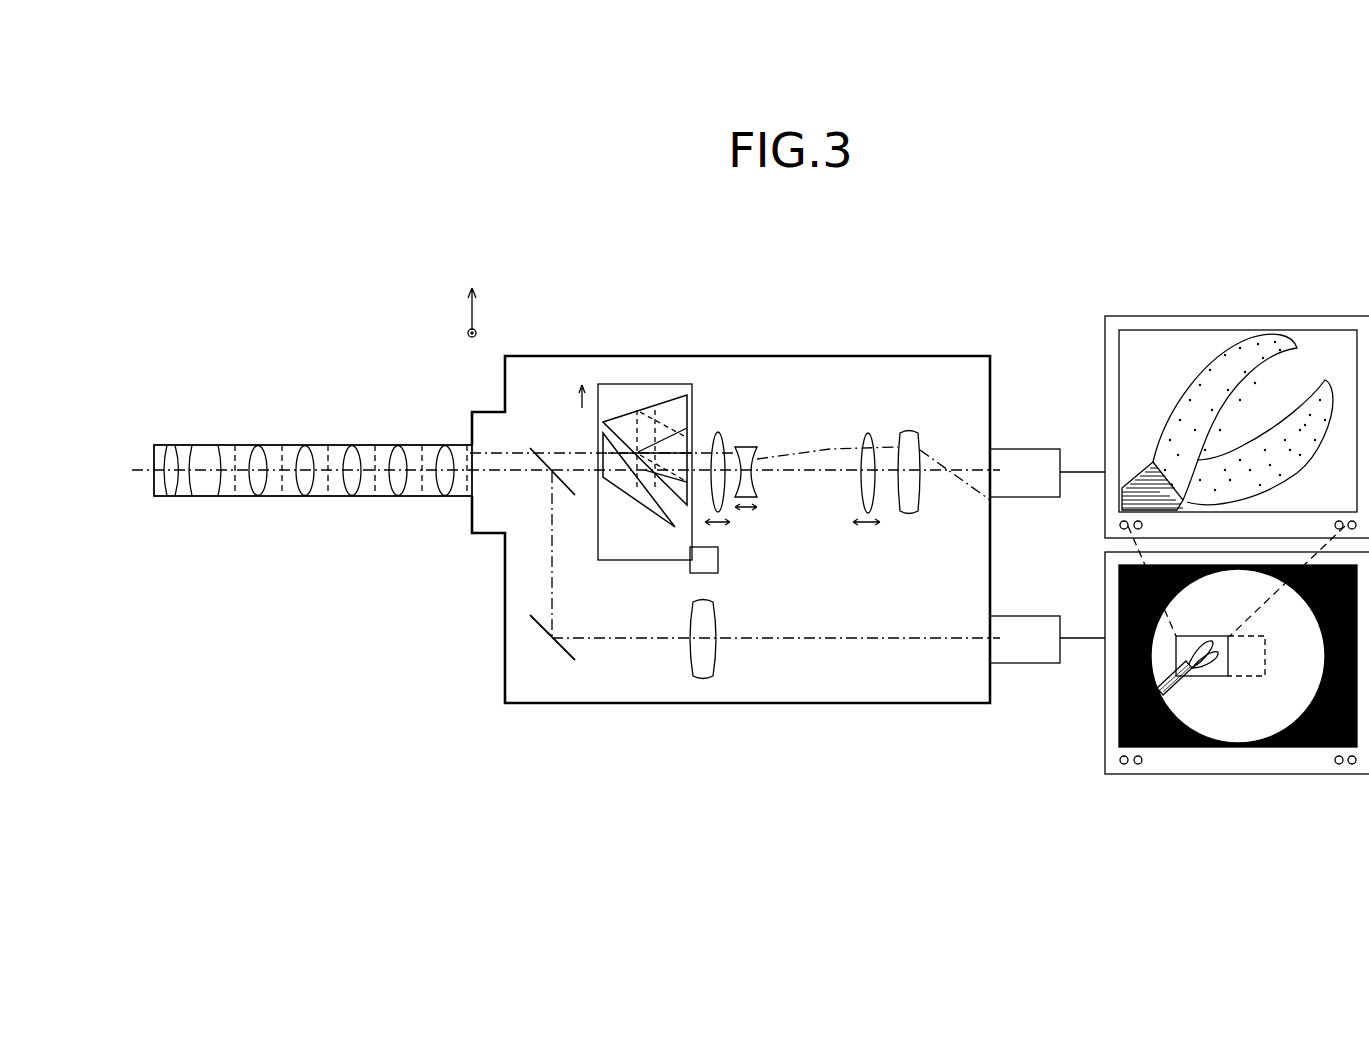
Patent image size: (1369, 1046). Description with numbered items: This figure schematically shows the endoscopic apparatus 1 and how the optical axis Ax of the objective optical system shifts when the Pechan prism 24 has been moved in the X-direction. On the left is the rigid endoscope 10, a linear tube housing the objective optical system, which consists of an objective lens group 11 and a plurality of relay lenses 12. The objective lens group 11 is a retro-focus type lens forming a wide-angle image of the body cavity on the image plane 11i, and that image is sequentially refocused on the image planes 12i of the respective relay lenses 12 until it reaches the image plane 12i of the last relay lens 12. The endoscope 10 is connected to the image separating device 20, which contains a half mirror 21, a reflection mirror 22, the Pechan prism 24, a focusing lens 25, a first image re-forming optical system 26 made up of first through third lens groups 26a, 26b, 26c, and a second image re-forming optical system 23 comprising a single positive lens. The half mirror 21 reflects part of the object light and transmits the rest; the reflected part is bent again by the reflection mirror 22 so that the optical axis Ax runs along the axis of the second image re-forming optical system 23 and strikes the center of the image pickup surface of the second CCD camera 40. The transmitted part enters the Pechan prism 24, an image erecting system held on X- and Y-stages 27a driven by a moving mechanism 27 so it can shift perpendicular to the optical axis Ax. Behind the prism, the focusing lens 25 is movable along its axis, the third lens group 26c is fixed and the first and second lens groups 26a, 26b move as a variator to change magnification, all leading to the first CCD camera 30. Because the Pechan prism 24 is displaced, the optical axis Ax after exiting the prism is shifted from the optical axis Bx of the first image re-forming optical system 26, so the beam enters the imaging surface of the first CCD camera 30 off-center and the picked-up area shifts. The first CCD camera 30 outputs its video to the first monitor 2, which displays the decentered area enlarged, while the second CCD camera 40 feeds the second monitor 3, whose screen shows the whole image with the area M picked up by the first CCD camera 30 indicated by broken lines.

The endoscopic apparatus 1 is at (938, 312).
The first monitor 2 is at (1240, 316).
The second monitor 3 is at (1238, 775).
The rigid endoscope 10 is at (422, 445).
The objective lens group 11 is at (225, 437).
The relay lenses 12 is at (262, 445).
The image plane 11i is at (235, 499).
The image planes 12i is at (282, 499).
The image separating device 20 is at (540, 356).
The half mirror 21 is at (572, 491).
The reflection mirror 22 is at (548, 632).
The second image re-forming optical system 23 is at (716, 661).
The Pechan prism 24 is at (672, 399).
The focusing lens 25 is at (716, 432).
The first image re-forming optical system 26 is at (923, 391).
The first lens group 26a is at (746, 447).
The second lens group 26b is at (868, 433).
The third lens group 26c is at (909, 431).
The moving mechanism 27 is at (718, 571).
The X- and Y-stages 27a is at (640, 560).
The first CCD camera 30 is at (1027, 449).
The second CCD camera 40 is at (1027, 665).
The marker frame M is at (1212, 640).
The optical axis of the objective optical system Ax is at (503, 481).
The optical axis of the first image re-forming optical system Bx is at (504, 445).